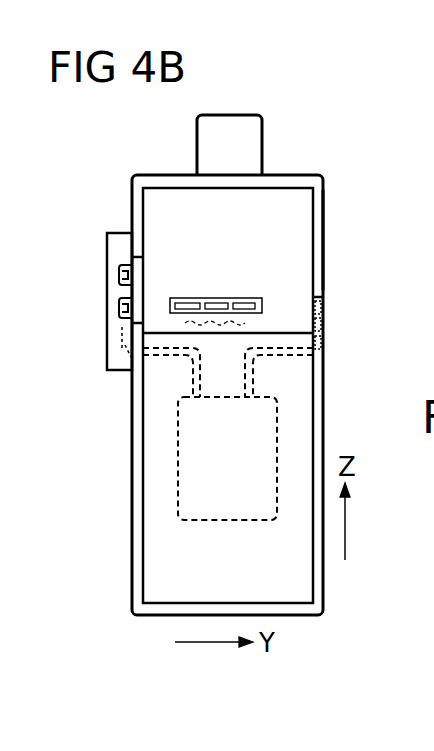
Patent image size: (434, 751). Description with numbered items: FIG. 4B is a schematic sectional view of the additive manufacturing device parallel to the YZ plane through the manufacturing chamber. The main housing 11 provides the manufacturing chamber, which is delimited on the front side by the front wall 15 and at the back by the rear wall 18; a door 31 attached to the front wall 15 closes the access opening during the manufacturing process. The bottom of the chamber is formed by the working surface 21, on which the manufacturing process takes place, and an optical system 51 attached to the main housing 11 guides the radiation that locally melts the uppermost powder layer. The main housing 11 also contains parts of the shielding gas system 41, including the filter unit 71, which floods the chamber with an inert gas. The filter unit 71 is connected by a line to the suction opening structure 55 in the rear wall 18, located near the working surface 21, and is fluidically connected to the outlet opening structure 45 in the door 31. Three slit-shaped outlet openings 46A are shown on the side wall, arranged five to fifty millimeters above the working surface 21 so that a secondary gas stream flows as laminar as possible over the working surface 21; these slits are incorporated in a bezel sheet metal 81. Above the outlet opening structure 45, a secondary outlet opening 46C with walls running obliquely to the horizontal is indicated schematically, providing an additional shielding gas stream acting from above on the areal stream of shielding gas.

The main housing 11 is at (131, 557).
The front wall 15 is at (130, 188).
The rear wall 18 is at (323, 237).
The working surface 21 is at (168, 327).
The door 31 is at (120, 233).
The shielding gas system 41 is at (228, 525).
The outlet opening structure 45 is at (119, 305).
The slit-shaped outlet opening 46A is at (241, 298).
The secondary outlet opening 46C is at (119, 273).
The optical system 51 is at (255, 129).
The suction opening structure 55 is at (323, 298).
The filter unit 71 is at (178, 463).
The bezel sheet metal 81 is at (258, 298).